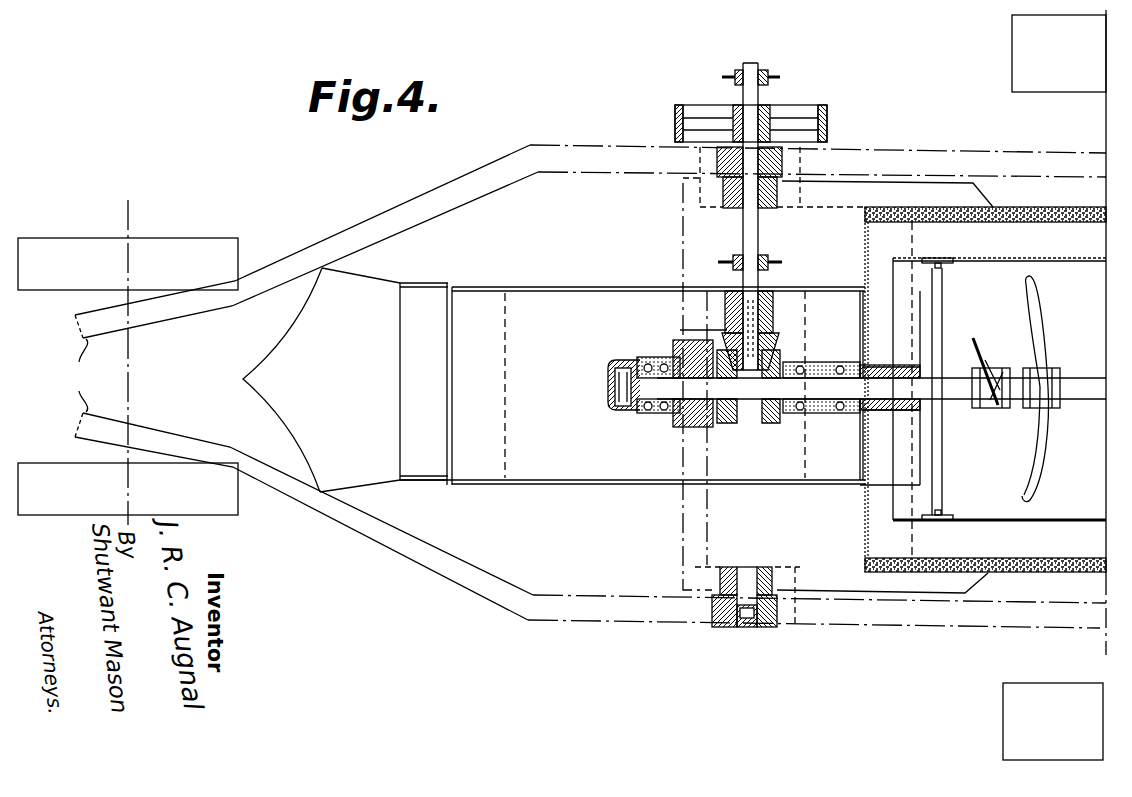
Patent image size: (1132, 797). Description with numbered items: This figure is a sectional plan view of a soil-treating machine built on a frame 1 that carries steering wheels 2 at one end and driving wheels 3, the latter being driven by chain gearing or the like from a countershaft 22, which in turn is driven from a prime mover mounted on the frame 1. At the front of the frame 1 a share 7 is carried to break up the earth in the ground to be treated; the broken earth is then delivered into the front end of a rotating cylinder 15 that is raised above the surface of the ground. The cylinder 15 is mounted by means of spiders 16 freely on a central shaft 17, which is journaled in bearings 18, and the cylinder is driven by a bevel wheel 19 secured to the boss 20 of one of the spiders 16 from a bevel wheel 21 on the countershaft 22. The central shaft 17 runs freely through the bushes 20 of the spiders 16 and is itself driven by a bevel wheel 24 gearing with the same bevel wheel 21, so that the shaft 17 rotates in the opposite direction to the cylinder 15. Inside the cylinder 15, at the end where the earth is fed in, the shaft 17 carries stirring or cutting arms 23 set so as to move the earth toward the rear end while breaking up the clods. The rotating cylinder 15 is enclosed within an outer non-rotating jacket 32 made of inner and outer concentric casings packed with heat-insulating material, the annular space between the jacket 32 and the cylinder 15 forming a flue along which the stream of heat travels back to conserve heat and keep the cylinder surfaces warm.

The frame 1 is at (393, 209).
The steering wheels 2 is at (128, 376).
The driving wheels 3 is at (1012, 72).
The share 7 is at (554, 380).
The rotating cylinder 15 is at (975, 520).
The spiders 16 is at (937, 470).
The central shaft 17 is at (1085, 386).
The bearings 18 is at (650, 403).
The bevel wheel 19 is at (762, 419).
The boss 20 is at (879, 413).
The bevel wheel 21 is at (762, 357).
The countershaft 22 is at (750, 235).
The stirring or cutting arms 23 is at (980, 345).
The bevel wheel 24 is at (730, 419).
The outer non-rotating jacket 32 is at (1009, 572).